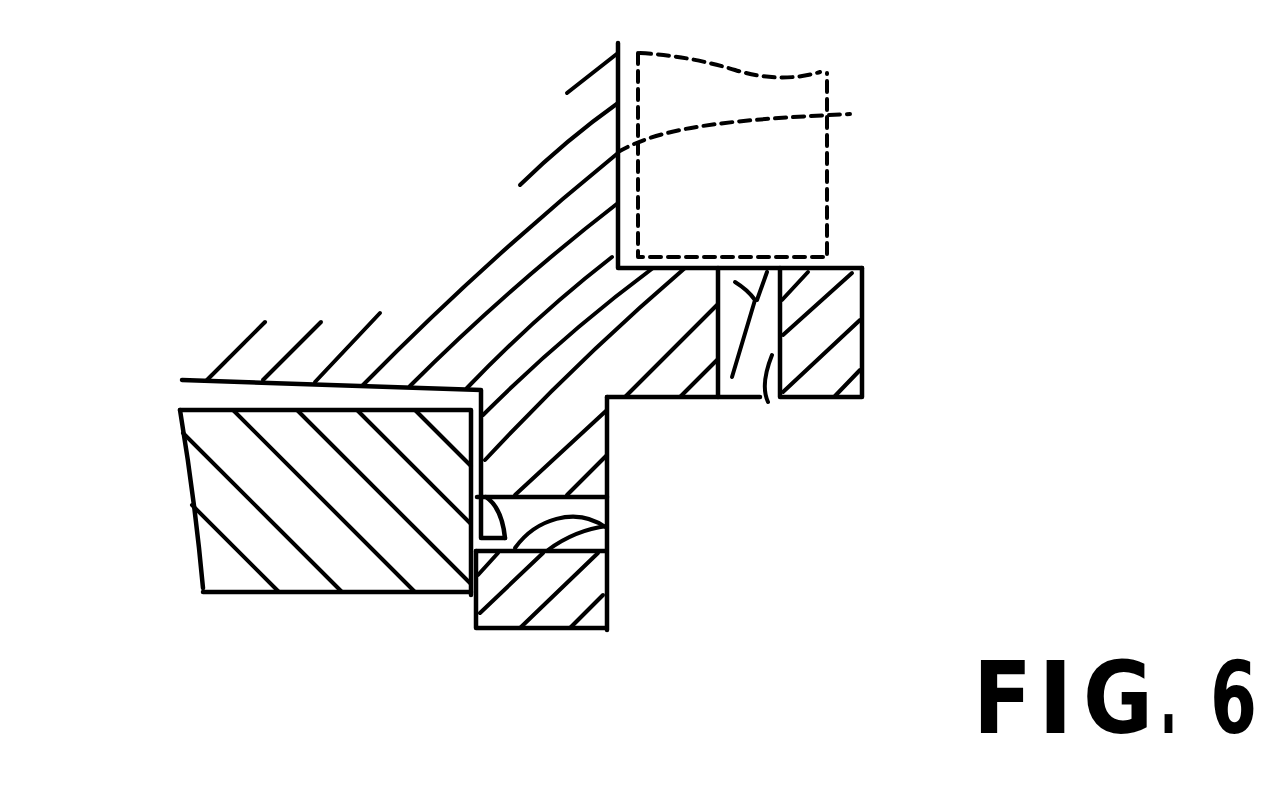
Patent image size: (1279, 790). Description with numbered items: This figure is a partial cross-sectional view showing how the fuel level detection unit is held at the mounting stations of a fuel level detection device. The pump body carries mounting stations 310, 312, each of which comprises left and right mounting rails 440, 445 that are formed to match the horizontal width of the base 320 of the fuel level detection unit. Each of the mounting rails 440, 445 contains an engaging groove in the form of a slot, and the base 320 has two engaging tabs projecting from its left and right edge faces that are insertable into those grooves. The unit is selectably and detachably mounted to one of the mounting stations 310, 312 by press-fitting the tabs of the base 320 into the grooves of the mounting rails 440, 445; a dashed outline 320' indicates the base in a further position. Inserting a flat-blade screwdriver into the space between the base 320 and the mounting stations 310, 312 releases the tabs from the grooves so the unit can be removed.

The mounting station 310 is at (297, 398).
The mounting station 312 is at (850, 114).
The base 320 is at (314, 562).
The cover in alternate position 320' is at (853, 155).
The left mounting rail 440 is at (862, 350).
The right mounting rail 445 is at (533, 630).